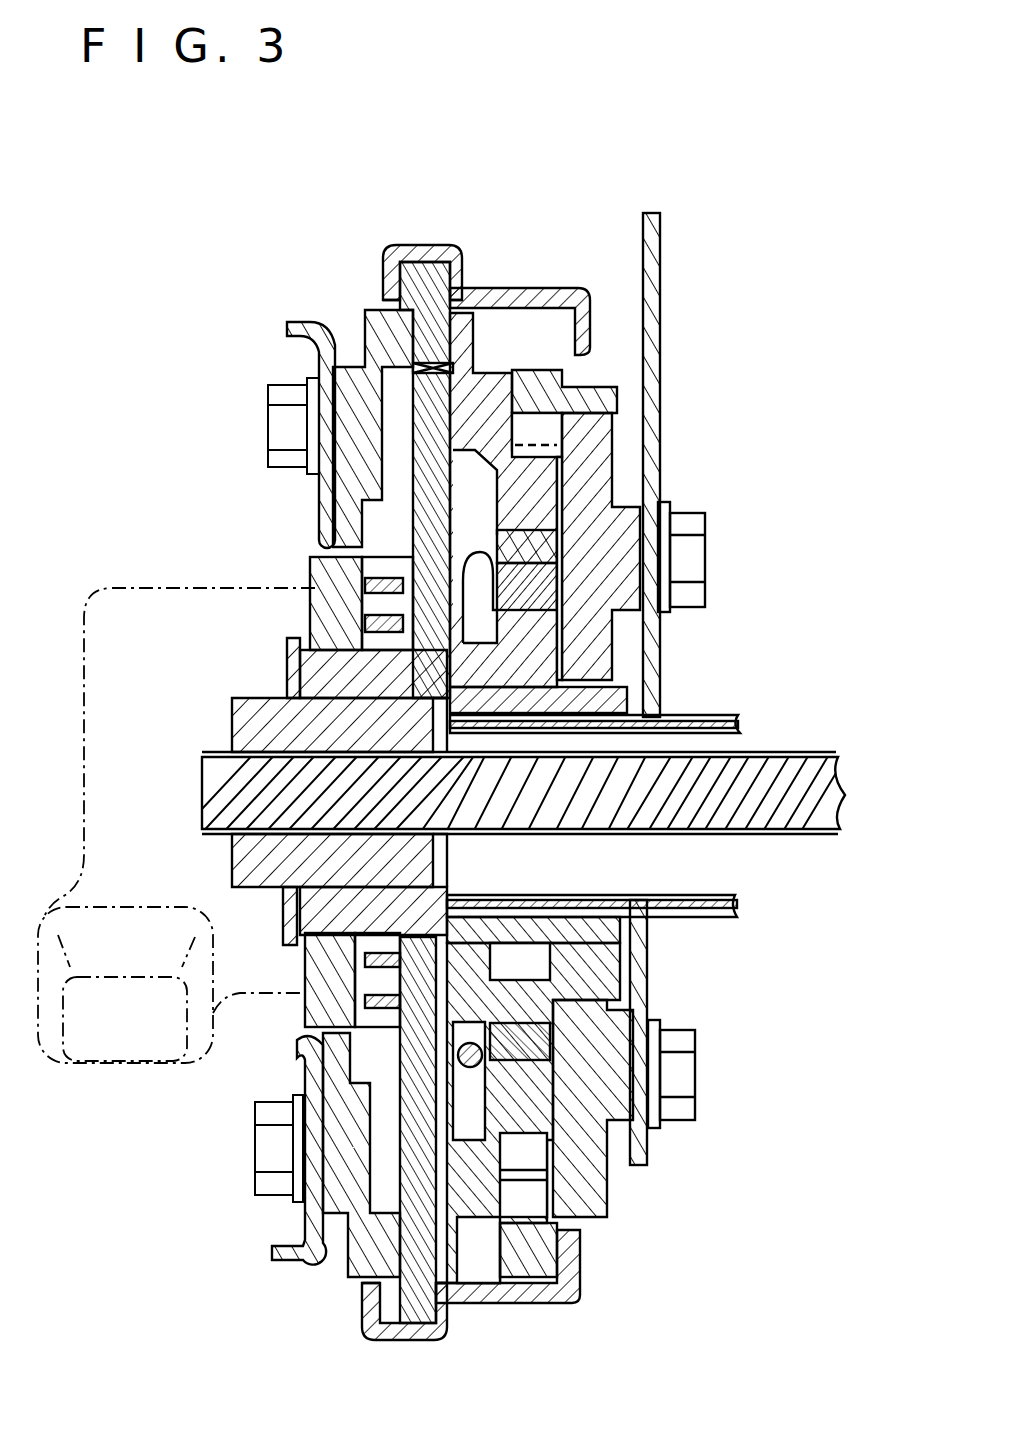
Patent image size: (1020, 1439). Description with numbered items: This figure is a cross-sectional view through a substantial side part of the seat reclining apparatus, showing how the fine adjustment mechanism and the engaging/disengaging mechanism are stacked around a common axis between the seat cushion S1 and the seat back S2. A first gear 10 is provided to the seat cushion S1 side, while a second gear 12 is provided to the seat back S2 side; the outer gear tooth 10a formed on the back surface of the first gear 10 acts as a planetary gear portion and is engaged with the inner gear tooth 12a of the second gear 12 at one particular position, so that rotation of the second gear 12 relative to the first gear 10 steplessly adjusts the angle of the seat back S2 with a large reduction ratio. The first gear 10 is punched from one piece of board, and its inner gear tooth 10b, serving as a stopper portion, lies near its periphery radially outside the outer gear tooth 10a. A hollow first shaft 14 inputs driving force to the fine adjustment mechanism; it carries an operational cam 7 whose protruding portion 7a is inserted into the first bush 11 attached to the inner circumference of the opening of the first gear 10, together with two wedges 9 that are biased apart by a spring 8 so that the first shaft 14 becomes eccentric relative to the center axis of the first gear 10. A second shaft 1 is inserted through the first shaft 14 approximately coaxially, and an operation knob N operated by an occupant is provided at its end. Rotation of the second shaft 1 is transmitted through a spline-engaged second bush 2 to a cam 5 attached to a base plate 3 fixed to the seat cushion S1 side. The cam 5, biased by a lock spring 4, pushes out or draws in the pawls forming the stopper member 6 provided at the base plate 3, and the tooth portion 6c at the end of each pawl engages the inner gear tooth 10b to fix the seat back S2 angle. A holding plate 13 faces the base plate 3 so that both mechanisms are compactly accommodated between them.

The second shaft 1 is at (205, 762).
The second bush 2 is at (235, 700).
The base plate 3 is at (310, 965).
The lock spring 4 is at (370, 1000).
The cam 5 is at (355, 660).
The stopper member 6 is at (425, 430).
The tooth portion 6c is at (378, 310).
The operational cam 7 is at (640, 930).
The protruding portion 7a is at (562, 1000).
The spring 8 is at (478, 548).
The wedges 9 is at (560, 625).
The first gear 10 is at (488, 372).
The outer gear tooth 10a is at (560, 450).
The inner gear tooth 10b is at (362, 777).
The first bush 11 is at (540, 547).
The second gear 12 is at (617, 425).
The inner gear tooth 12a is at (548, 410).
The holding plate 13 is at (540, 300).
The first shaft 14 is at (720, 712).
The seat cushion S1 is at (302, 300).
The seat back S2 is at (688, 322).
The operation knob N is at (102, 1067).